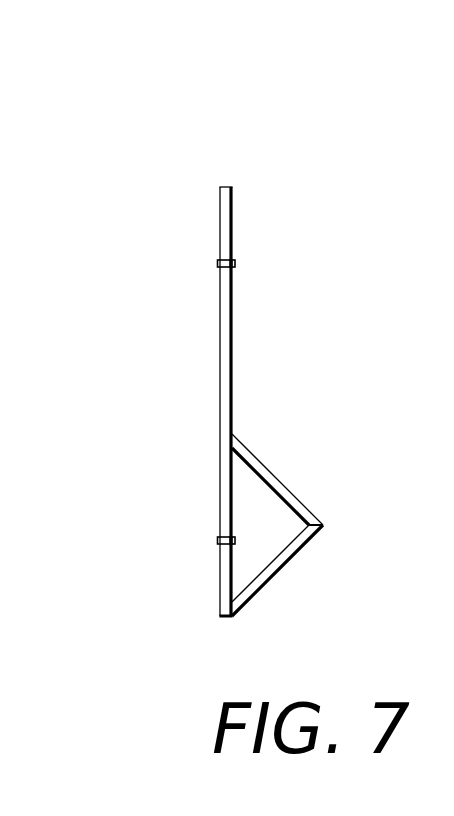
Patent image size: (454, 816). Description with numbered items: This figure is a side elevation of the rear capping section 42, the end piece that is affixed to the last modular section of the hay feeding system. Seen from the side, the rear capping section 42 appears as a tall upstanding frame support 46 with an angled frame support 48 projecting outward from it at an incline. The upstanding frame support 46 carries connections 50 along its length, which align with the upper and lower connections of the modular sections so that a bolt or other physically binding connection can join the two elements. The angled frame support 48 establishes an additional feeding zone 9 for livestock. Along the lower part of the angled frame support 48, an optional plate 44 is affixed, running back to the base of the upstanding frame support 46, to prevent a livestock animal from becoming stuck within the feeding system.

The rear capping section 42 is at (315, 140).
The upstanding frame support 46 is at (220, 322).
The connection 50 is at (221, 263).
The angled frame support 48 is at (277, 474).
The plate 44 is at (280, 568).
The feeding zone 9 is at (293, 437).